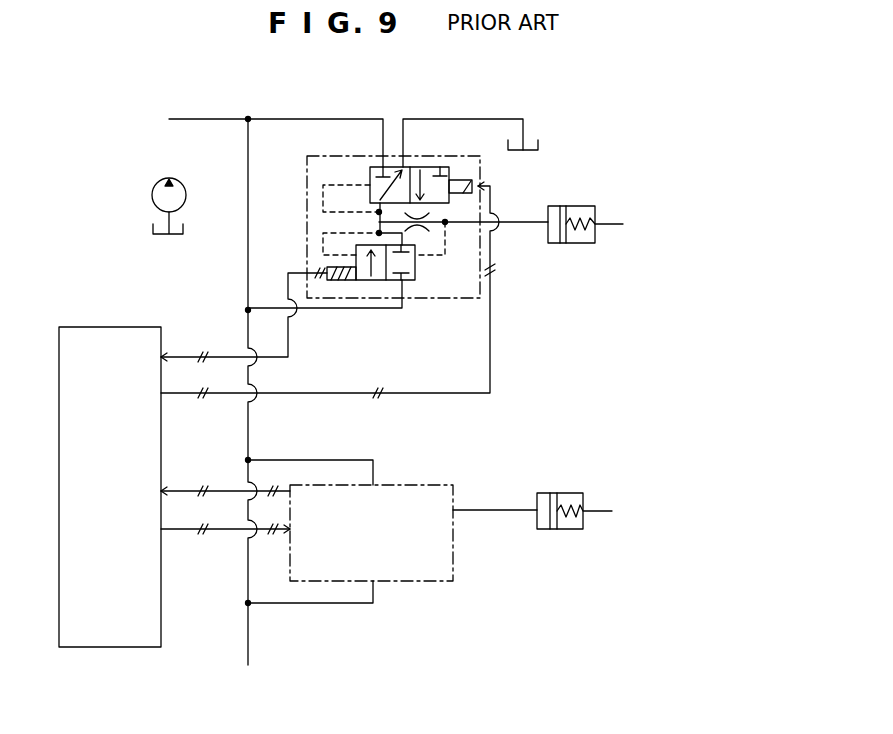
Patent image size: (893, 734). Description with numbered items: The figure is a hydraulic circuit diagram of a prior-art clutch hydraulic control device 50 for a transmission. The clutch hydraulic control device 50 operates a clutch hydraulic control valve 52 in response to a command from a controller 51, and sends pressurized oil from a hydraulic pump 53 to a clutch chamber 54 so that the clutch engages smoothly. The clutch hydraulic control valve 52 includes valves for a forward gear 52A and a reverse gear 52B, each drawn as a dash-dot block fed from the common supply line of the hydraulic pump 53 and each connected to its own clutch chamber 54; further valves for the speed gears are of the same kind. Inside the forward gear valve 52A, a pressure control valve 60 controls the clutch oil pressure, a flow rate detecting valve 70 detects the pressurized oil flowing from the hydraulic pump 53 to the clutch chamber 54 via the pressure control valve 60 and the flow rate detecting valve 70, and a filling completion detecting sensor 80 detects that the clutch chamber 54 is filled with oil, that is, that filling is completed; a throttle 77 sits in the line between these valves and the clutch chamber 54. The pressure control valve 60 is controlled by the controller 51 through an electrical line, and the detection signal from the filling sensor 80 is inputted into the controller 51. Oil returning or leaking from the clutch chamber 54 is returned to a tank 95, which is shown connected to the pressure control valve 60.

The clutch hydraulic control device 50 is at (205, 285).
The controller 51 is at (160, 625).
The clutch hydraulic control valve 52 is at (372, 236).
The valve for a forward gear 52A is at (442, 298).
The valve for a reverse gear 52B is at (410, 582).
The hydraulic pump 53 is at (152, 195).
The clutch chamber 54 is at (553, 243).
The pressure control valve 60 is at (455, 167).
The flow rate detecting valve 70 is at (445, 268).
The orifice 77 is at (417, 231).
The filling completion detecting sensor 80 is at (341, 282).
The tank 95 is at (531, 141).